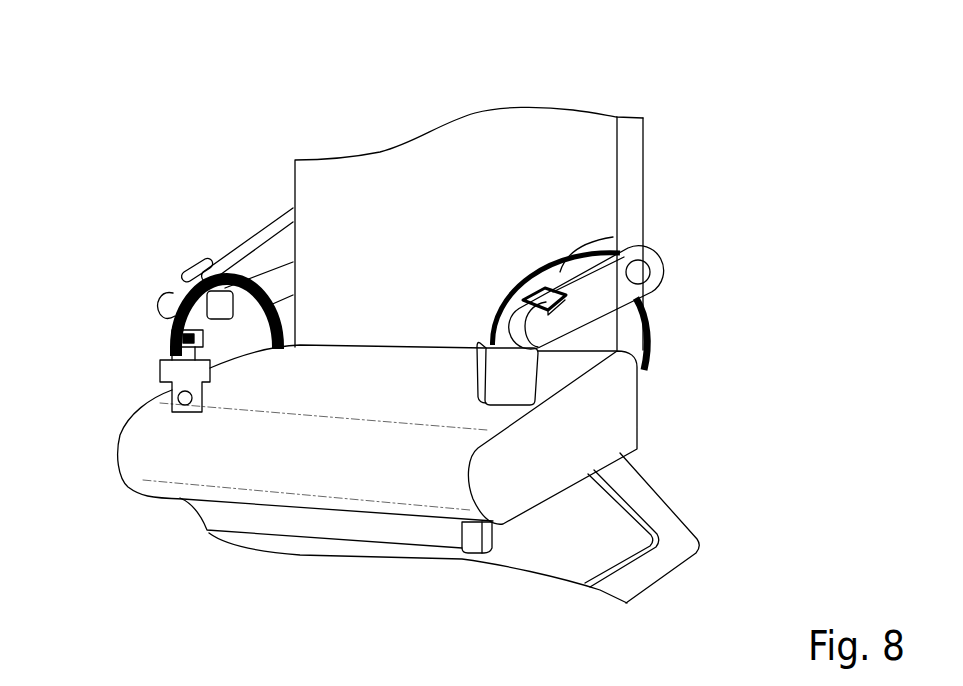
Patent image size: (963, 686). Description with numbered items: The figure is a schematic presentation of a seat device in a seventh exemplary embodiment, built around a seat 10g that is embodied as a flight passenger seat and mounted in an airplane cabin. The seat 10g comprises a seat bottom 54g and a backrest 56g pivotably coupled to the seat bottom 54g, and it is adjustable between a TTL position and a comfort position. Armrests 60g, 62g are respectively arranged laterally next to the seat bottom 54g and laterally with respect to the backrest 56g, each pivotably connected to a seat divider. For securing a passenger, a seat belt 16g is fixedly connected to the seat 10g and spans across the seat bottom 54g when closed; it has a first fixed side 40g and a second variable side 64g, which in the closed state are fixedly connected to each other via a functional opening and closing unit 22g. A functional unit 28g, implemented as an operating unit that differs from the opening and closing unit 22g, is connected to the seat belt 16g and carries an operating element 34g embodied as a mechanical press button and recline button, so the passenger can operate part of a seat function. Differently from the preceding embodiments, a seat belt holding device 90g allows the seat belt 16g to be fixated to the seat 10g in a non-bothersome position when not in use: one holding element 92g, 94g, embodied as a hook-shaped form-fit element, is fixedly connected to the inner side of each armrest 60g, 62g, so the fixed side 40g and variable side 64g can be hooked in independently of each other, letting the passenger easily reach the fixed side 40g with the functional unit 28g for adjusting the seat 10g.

The seat 10g is at (438, 119).
The seat belt 16g is at (157, 353).
The functional opening and closing unit 22g is at (540, 367).
The functional unit 28g is at (160, 367).
The operating element 34g is at (155, 338).
The first fixed side 40g is at (264, 284).
The seat bottom 54g is at (310, 398).
The backrest 56g is at (602, 146).
The armrest 60g is at (612, 283).
The armrest 62g is at (277, 257).
The second variable side 64g is at (565, 257).
The seat belt holding device 90g is at (530, 263).
The holding element 92g is at (600, 313).
The holding element 94g is at (226, 314).